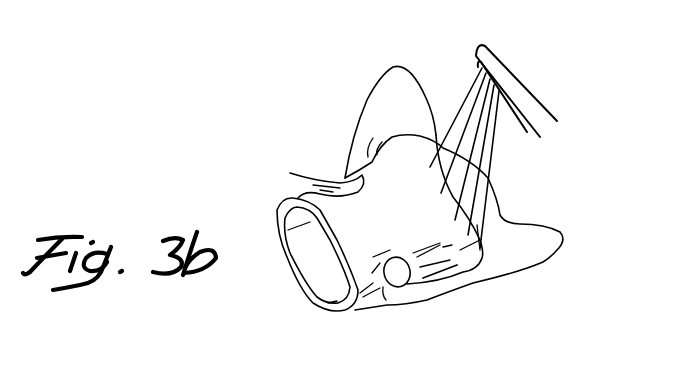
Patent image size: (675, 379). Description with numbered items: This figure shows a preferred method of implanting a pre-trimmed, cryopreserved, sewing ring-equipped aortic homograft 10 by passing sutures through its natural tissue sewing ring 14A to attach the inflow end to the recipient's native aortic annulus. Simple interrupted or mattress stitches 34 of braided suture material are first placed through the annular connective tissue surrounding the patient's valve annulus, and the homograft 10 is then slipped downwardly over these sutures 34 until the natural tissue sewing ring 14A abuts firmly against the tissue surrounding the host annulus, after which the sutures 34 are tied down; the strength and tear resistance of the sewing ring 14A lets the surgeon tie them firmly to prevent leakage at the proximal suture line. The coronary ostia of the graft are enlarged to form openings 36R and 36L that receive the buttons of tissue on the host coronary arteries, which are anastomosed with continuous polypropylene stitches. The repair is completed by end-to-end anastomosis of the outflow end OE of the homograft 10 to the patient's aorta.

The aortic homograft 10 is at (320, 156).
The natural tissue sewing ring 14A is at (391, 145).
The stitches 34 is at (490, 150).
The right coronary opening 36R is at (315, 181).
The left coronary opening 36L is at (393, 271).
The outflow end OE is at (278, 237).